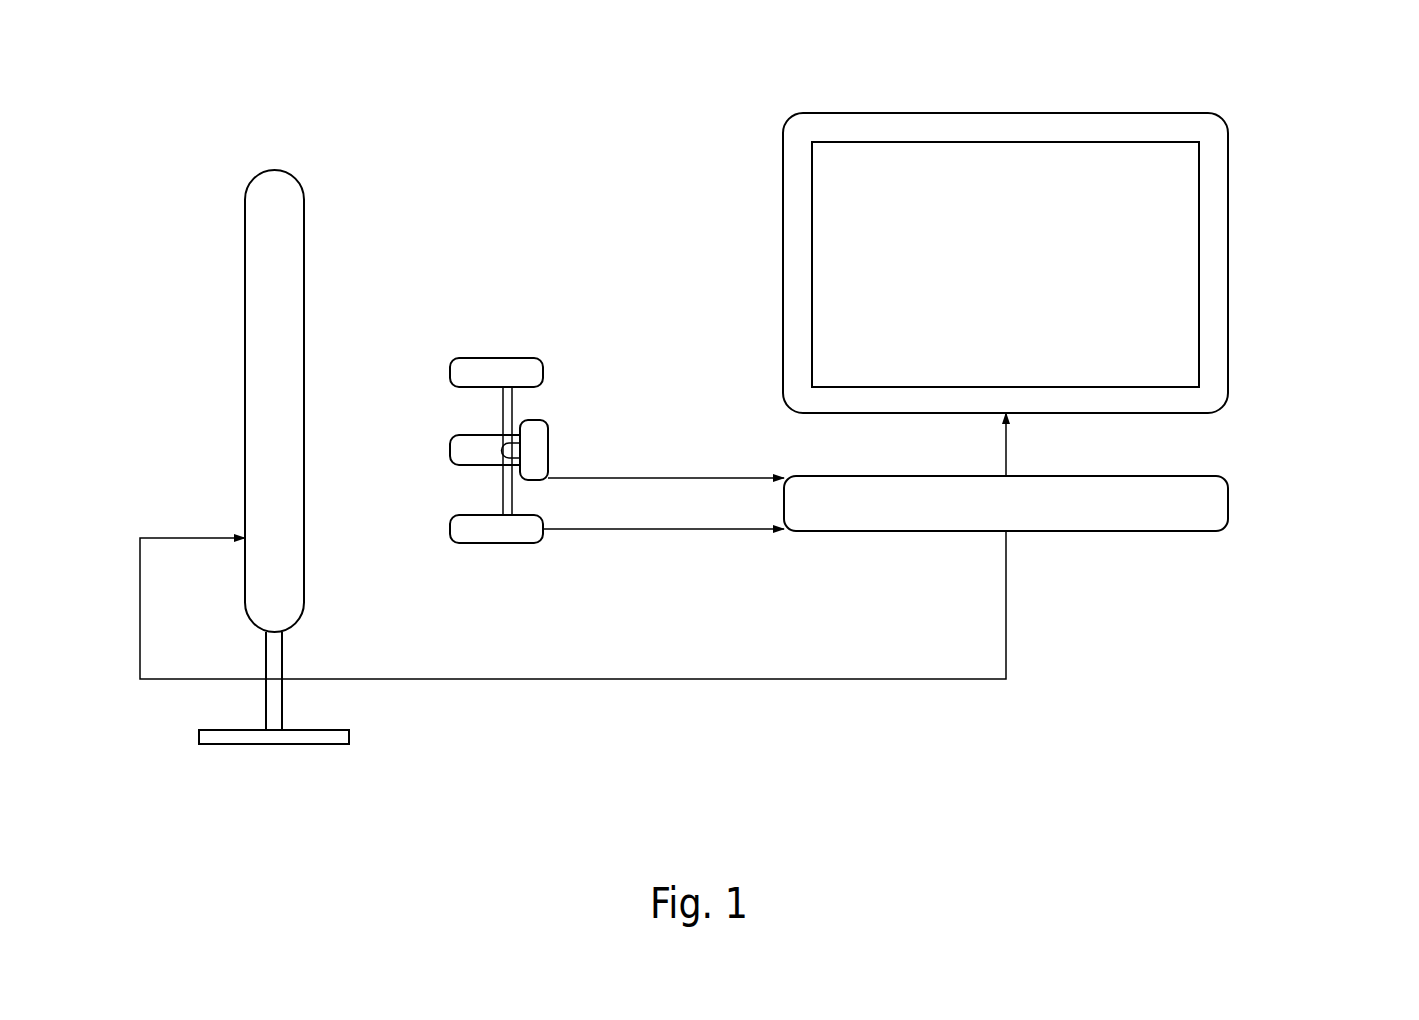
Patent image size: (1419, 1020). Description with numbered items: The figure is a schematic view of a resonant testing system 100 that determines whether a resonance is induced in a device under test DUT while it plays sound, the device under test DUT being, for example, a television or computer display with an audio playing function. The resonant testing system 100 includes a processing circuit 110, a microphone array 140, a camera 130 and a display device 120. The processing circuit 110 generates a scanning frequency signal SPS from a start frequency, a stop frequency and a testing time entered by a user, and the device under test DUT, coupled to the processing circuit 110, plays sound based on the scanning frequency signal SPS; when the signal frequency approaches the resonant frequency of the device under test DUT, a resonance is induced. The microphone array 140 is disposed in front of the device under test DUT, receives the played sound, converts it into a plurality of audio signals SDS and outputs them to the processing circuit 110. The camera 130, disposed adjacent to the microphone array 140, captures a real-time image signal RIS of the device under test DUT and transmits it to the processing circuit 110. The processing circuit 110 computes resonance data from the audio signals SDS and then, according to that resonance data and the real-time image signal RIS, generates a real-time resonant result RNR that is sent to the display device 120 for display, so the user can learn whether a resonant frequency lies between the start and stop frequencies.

The resonant testing system 100 is at (158, 48).
The processing circuit 110 is at (1228, 500).
The display device 120 is at (1228, 247).
The camera 130 is at (548, 432).
The microphone array 140 is at (496, 357).
The device under test DUT is at (272, 169).
The real-time image signal RIS is at (666, 458).
The audio signals SDS is at (663, 549).
The real-time resonant result RNR is at (1043, 444).
The scanning frequency signal SPS is at (573, 627).